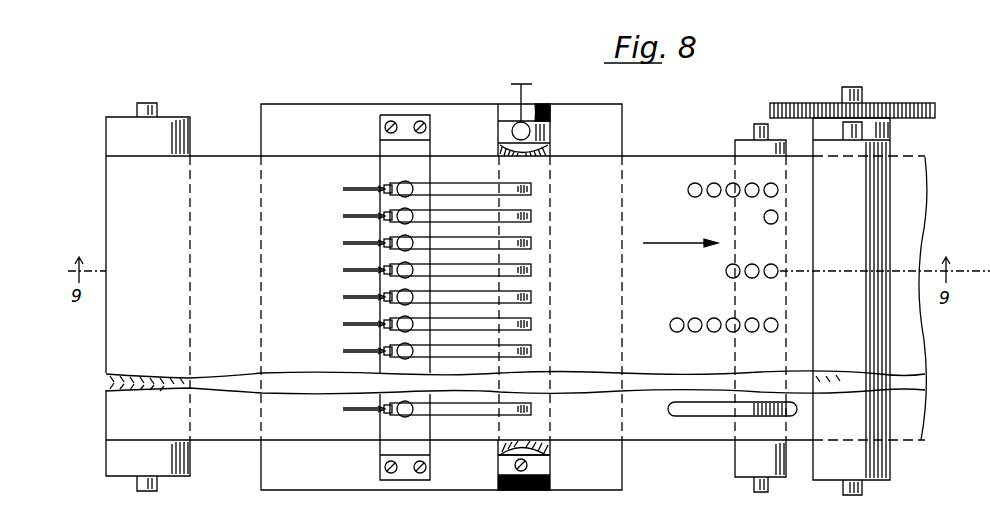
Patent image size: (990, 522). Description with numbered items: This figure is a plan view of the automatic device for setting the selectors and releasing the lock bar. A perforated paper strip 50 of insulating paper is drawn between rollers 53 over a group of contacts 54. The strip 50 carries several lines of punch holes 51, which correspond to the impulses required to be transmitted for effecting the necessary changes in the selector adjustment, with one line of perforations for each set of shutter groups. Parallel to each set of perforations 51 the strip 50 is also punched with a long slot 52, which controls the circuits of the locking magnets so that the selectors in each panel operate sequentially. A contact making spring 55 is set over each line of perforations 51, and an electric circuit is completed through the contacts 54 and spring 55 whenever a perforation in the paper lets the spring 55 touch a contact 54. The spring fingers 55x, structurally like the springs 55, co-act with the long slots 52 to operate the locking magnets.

The perforated paper strip 50 is at (665, 163).
The punch holes 51 is at (696, 197).
The long slot 52 is at (703, 412).
The rollers 53 is at (886, 156).
The contacts 54 is at (552, 152).
The contact making spring 55 is at (474, 208).
The spring fingers 55x is at (461, 416).